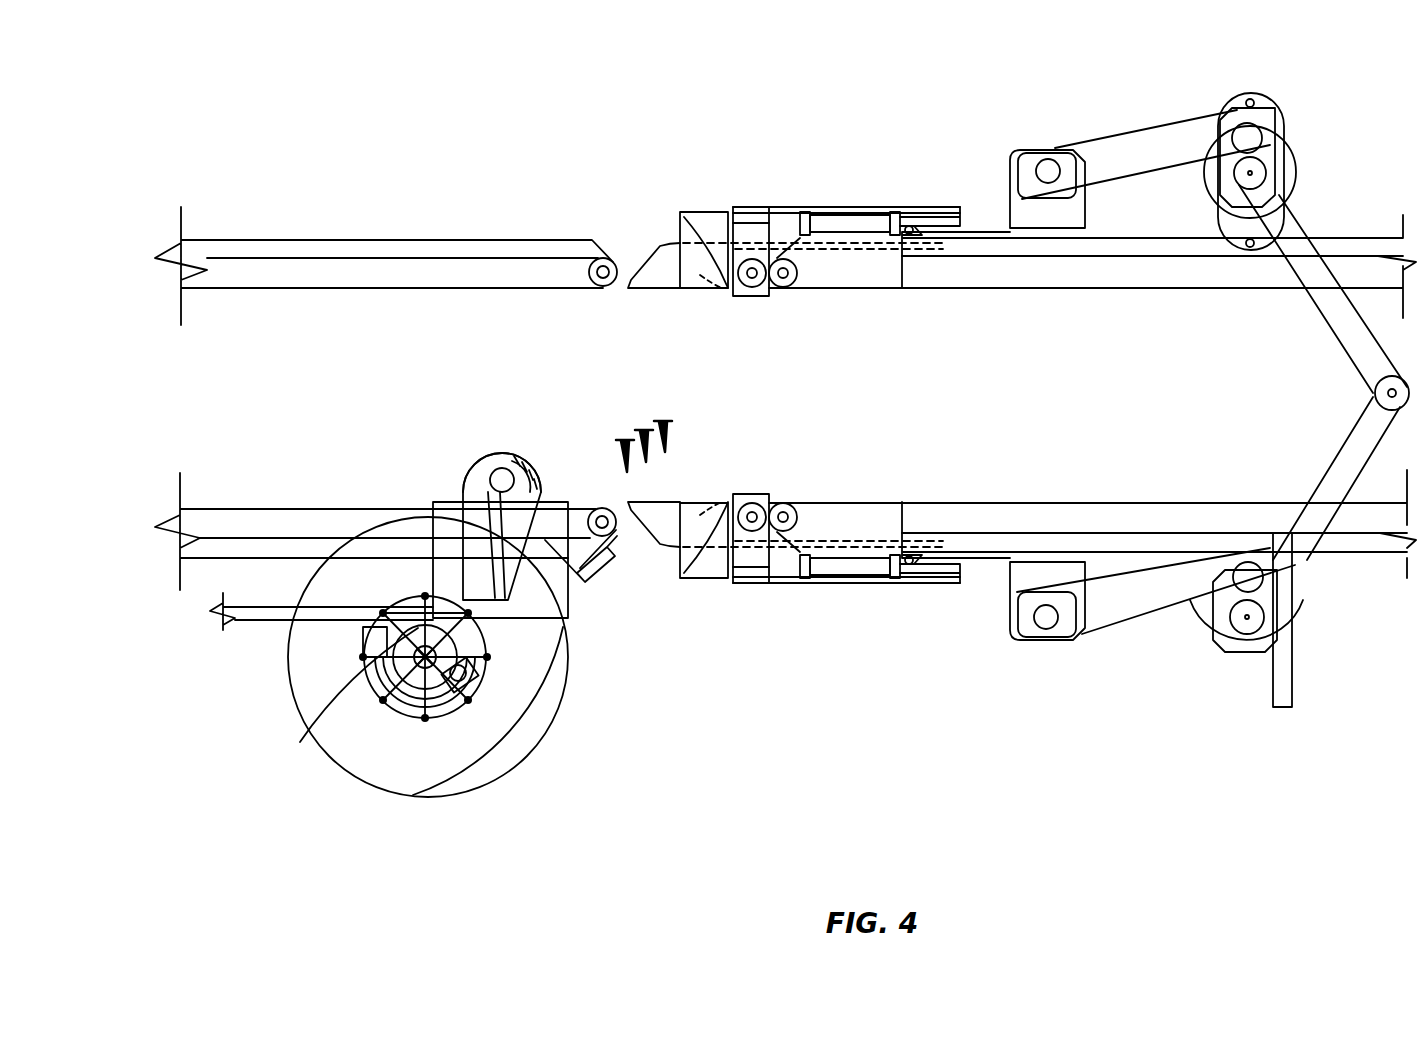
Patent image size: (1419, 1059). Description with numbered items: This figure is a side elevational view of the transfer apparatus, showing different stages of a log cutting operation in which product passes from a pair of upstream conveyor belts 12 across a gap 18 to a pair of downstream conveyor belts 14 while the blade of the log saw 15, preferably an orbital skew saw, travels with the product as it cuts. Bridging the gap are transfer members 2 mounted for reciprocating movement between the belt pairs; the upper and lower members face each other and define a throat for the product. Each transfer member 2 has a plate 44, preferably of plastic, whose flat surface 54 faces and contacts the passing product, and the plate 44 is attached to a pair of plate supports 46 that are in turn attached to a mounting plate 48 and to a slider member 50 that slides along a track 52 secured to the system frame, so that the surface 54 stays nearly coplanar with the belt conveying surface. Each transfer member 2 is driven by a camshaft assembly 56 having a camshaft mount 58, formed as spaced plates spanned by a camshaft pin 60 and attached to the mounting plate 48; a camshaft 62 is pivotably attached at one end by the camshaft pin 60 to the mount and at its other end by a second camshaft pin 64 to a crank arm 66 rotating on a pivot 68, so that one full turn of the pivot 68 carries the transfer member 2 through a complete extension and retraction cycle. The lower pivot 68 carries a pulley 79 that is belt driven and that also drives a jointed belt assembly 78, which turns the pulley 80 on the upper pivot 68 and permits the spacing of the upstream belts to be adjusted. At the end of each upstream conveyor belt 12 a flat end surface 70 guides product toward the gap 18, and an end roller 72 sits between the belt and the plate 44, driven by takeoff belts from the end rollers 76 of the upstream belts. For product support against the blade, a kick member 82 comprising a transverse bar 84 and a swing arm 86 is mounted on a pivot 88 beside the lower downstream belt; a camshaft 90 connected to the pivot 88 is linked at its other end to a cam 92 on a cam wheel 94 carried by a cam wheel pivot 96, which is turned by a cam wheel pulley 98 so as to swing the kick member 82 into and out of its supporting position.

The transfer member 2 is at (643, 224).
The upstream conveyor belts 12 is at (1035, 275).
The downstream conveyor belts 14 is at (298, 272).
The log saw 15 is at (672, 428).
The gap 18 is at (606, 305).
The plate 44 is at (632, 291).
The plate supports 46 is at (778, 242).
The mounting plate 48 is at (1003, 229).
The slider member 50 is at (820, 221).
The track 52 is at (904, 226).
The flat surface 54 is at (674, 291).
The camshaft assembly 56 is at (1112, 106).
The camshaft mount 58 is at (1010, 165).
The camshaft pin 60 is at (1048, 168).
The camshaft 62 is at (1142, 135).
The second camshaft pin 64 is at (1265, 116).
The crank arm 66 is at (1270, 158).
The pivot 68 is at (1288, 192).
The end surface 70 is at (684, 217).
The end roller 72 is at (752, 288).
The end rollers of the upstream conveyor belts 76 is at (790, 288).
The jointed belt assembly 78 is at (1320, 318).
The pulley 79 is at (1293, 628).
The pulley 80 is at (1216, 196).
The kick member 82 is at (562, 432).
The transverse bar 84 is at (566, 608).
The swing arm 86 is at (518, 455).
The pivot 88 is at (490, 470).
The camshaft 90 is at (478, 500).
The cam 92 is at (493, 647).
The cam wheel 94 is at (345, 752).
The cam wheel pivot 96 is at (362, 660).
The cam wheel pulley 98 is at (418, 790).